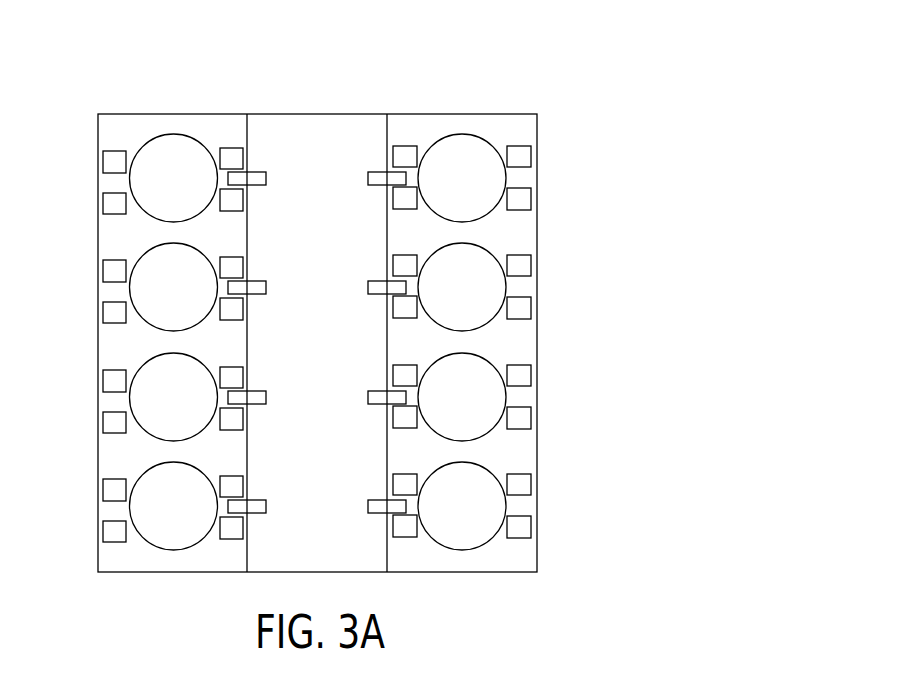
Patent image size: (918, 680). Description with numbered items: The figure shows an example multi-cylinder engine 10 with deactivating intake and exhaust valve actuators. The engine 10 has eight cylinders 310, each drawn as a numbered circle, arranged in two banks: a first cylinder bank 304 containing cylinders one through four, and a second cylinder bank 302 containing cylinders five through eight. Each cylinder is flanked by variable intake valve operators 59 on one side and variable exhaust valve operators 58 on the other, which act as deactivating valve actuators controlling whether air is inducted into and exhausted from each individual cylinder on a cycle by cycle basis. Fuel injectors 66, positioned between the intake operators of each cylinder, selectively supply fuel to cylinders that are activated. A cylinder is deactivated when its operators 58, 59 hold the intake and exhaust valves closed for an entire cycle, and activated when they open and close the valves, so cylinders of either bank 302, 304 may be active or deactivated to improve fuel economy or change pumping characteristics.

The multi-cylinder engine 10 is at (156, 58).
The second cylinder bank 302 is at (156, 58).
The first cylinder bank 304 is at (480, 301).
The cylinders 310 is at (320, 342).
The variable exhaust valve operators 58 is at (322, 342).
The variable intake valve operators 59 is at (318, 341).
The fuel injectors 66 is at (317, 350).